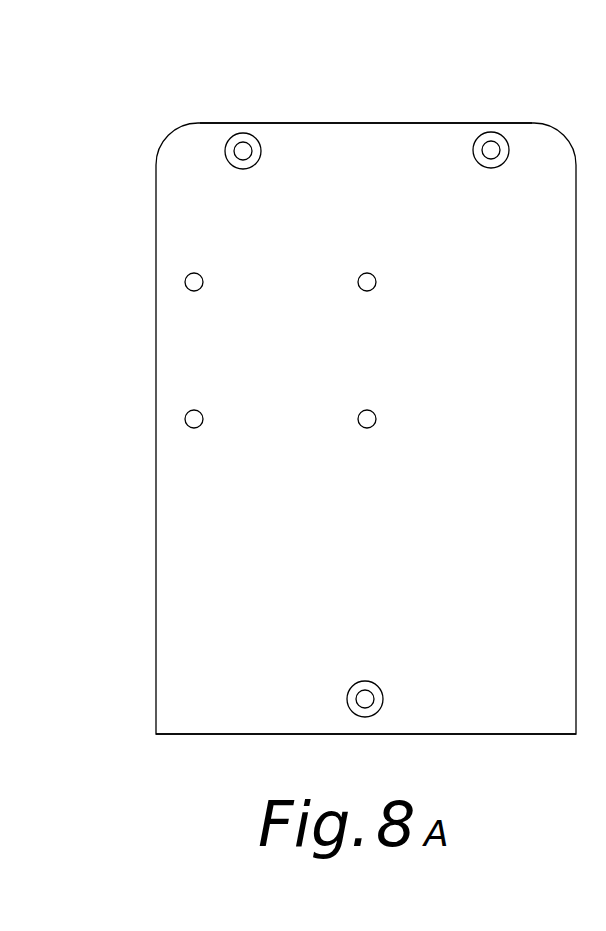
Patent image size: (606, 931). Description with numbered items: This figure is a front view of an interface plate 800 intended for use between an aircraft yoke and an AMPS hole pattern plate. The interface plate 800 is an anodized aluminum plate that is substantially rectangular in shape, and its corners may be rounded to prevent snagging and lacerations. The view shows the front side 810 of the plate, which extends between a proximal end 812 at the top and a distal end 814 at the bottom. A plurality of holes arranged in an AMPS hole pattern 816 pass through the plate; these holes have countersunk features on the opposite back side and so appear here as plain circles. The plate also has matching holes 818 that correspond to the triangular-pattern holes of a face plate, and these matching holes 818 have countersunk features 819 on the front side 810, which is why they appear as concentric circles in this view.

The interface plate 800 is at (88, 108).
The front side 810 is at (512, 703).
The proximal end 812 is at (390, 122).
The distal end 814 is at (205, 736).
The AMPS hole pattern holes 816 is at (195, 292).
The matching holes 818 is at (245, 152).
The countersunk features 819 is at (489, 168).